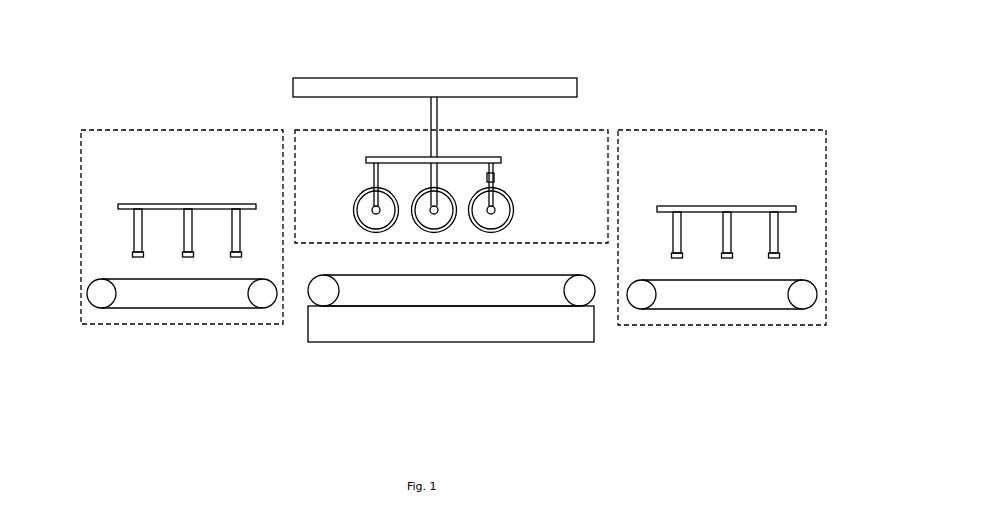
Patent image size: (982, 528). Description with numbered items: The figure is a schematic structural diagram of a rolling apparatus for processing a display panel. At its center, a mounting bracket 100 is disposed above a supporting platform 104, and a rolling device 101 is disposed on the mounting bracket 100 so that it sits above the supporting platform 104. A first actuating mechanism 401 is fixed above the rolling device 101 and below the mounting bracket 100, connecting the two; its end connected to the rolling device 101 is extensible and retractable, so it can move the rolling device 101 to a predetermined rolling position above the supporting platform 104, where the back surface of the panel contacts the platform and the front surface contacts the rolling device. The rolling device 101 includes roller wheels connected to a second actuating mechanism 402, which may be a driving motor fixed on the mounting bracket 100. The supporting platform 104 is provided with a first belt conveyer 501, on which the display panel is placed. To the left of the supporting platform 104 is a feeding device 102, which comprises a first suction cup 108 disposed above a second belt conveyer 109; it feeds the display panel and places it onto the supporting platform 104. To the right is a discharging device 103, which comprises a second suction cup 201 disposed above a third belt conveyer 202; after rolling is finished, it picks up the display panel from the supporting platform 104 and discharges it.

The mounting bracket 100 is at (330, 86).
The rolling device 101 is at (604, 155).
The feeding device 102 is at (183, 140).
The discharging device 103 is at (664, 152).
The supporting platform 104 is at (433, 313).
The first suction cup 108 is at (140, 253).
The second belt conveyer 109 is at (181, 308).
The second suction cup 201 is at (780, 255).
The third belt conveyer 202 is at (738, 309).
The first actuating mechanism 401 is at (434, 111).
The second actuating mechanism 402 is at (487, 178).
The first belt conveyer 501 is at (516, 292).